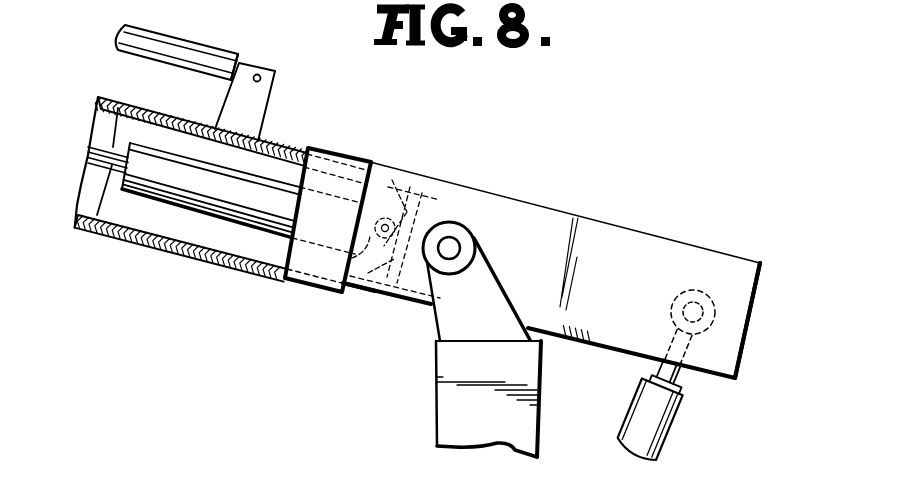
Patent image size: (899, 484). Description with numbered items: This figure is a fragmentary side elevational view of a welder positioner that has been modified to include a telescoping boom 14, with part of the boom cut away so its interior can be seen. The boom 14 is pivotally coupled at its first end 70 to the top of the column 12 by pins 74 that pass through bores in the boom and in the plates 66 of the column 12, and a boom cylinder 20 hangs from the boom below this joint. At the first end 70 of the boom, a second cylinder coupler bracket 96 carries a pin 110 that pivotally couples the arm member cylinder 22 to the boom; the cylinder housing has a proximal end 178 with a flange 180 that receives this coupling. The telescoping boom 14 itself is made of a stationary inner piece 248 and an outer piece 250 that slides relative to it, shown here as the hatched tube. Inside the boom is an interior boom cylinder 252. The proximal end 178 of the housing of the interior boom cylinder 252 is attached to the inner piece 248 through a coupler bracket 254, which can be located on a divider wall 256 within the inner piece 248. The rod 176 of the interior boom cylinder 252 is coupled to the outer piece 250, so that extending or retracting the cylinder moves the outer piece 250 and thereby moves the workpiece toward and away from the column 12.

The arm member cylinder 22 is at (205, 48).
The flange 180 is at (240, 63).
The pin 110 is at (263, 78).
The second cylinder coupler bracket 96 is at (261, 110).
The inner piece 248 is at (303, 147).
The coupler bracket 254 is at (387, 173).
The proximal end 178 is at (352, 252).
The divider wall 256 is at (363, 291).
The boom 14 is at (633, 178).
The first end 70 is at (748, 207).
The pins 74 is at (453, 247).
The plates 66 is at (452, 320).
The column 12 is at (447, 410).
The boom cylinder 20 is at (685, 392).
The rod 176 is at (96, 168).
The outer piece 250 is at (111, 235).
The interior boom cylinder 252 is at (197, 198).